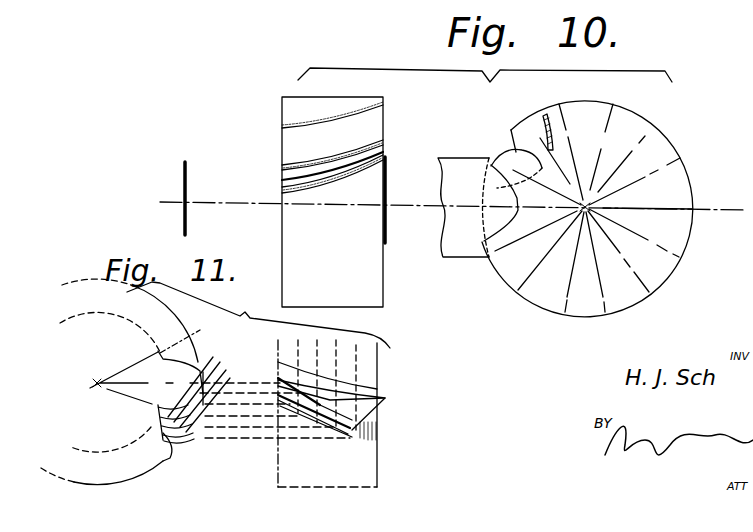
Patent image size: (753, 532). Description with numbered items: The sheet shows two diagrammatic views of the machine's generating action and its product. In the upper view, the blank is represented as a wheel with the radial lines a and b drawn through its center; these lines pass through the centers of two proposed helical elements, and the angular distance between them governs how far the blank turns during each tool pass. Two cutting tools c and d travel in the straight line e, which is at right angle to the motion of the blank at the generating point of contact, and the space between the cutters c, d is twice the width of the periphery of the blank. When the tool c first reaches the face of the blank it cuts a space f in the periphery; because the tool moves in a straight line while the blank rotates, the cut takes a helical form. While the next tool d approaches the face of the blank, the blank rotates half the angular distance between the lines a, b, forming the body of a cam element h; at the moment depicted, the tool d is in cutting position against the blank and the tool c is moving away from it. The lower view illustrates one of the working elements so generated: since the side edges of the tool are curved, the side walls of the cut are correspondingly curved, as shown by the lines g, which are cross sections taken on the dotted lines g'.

In FIG. 10, the radial line a is at (571, 129).
In FIG. 10, the radial line b is at (537, 176).
In FIG. 10, the cutting tool c is at (195, 195).
In FIG. 10, the cutting tool d is at (400, 200).
In FIG. 10, the straight line e is at (185, 202).
In FIG. 10, the space f is at (292, 142).
In FIG. 10, the cam element h is at (502, 157).
In FIG. 11, the lines g is at (196, 393).
In FIG. 11, the dotted lines g' is at (343, 413).